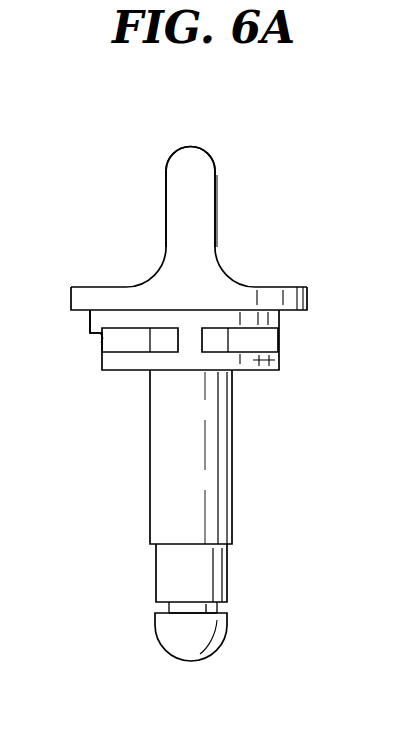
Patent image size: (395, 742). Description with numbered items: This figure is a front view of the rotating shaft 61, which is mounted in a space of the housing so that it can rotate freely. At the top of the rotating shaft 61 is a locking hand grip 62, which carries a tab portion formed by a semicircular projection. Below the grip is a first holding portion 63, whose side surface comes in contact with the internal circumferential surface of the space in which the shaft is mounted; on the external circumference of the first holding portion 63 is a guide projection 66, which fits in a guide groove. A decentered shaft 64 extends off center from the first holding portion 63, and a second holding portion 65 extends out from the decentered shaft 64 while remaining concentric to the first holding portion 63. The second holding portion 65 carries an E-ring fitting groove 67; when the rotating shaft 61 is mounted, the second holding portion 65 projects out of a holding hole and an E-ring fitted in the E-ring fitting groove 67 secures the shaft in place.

The rotating shaft 61 is at (237, 217).
The locking hand grip 62 is at (190, 178).
The first holding portion 63 is at (279, 364).
The decentered shaft 64 is at (215, 519).
The second holding portion 65 is at (212, 587).
The guide projection 66 is at (90, 326).
The E-ring fitting groove 67 is at (208, 608).